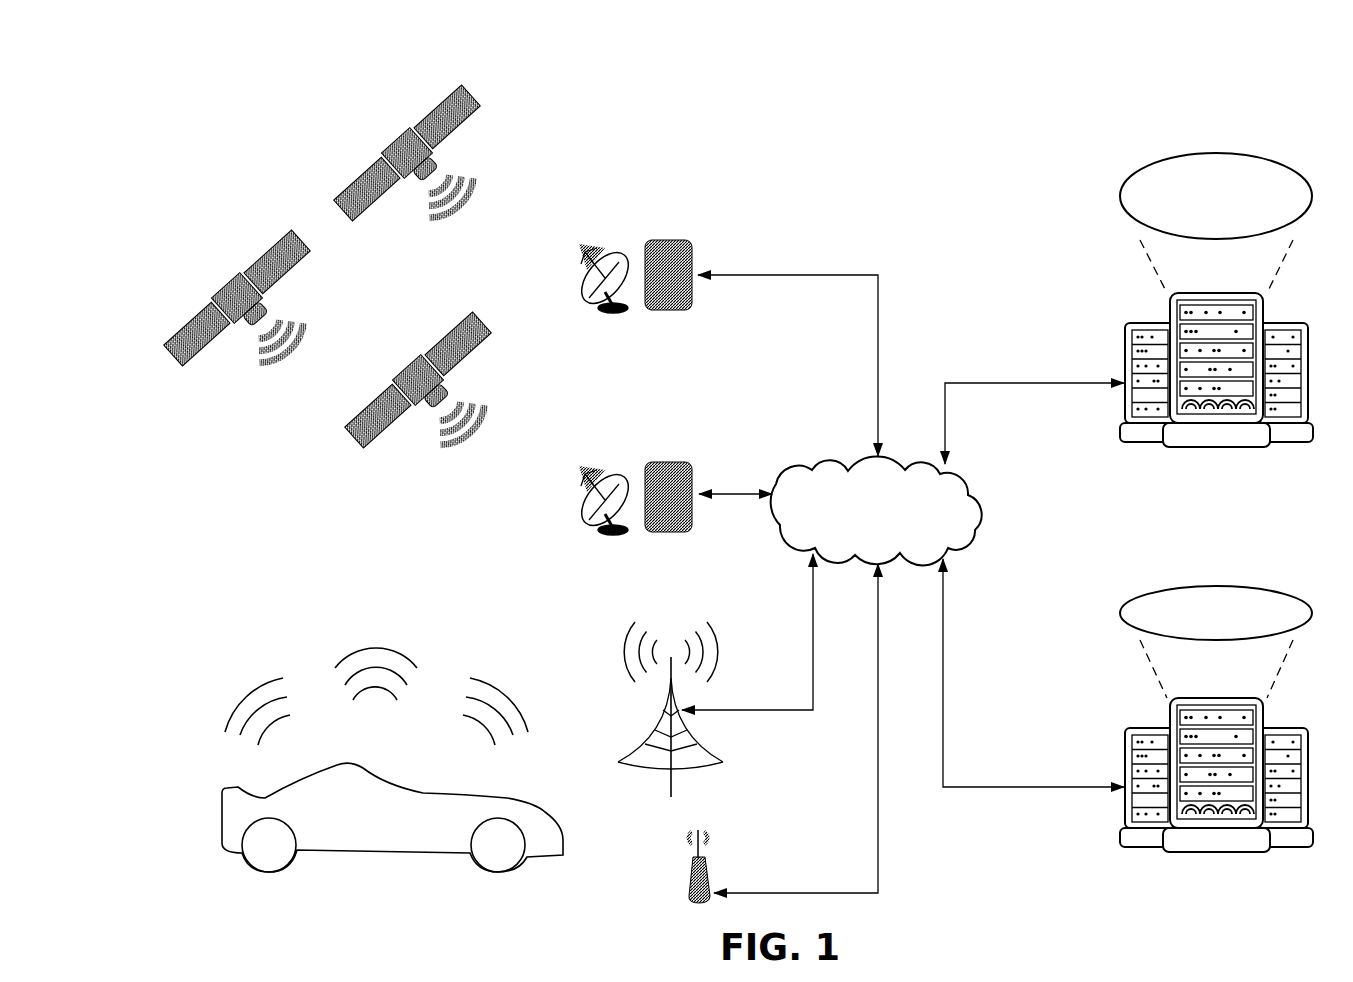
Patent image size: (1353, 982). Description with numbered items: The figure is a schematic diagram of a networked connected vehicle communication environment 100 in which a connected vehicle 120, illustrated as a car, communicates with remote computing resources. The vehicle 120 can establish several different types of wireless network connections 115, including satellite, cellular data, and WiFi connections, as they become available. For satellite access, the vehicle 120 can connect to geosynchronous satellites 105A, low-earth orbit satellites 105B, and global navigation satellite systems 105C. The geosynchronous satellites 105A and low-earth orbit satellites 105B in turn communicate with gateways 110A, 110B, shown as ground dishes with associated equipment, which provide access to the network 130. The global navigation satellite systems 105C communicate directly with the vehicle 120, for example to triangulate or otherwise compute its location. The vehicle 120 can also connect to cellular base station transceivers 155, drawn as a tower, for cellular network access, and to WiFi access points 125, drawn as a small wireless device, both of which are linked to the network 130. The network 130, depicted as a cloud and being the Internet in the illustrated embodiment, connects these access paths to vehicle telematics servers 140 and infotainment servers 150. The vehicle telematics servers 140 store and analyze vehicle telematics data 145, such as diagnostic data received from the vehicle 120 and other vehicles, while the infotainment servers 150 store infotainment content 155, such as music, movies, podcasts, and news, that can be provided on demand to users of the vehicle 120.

The networked connected vehicle communication environment 100 is at (236, 76).
The geosynchronous satellites 105A is at (387, 142).
The low-earth orbit satellites 105B is at (397, 362).
The global navigation satellite systems 105C is at (213, 290).
The gateway 110A is at (696, 258).
The gateway 110B is at (695, 534).
The wireless network connections 115 is at (307, 602).
The connected vehicle 120 is at (218, 832).
The WiFi access point 125 is at (690, 885).
The network 130 is at (876, 510).
The vehicle telematics servers 140 is at (1216, 381).
The vehicle telematics data 145 is at (1216, 196).
The infotainment servers 150 is at (1216, 751).
The cellular base station transceiver 155 is at (662, 786).